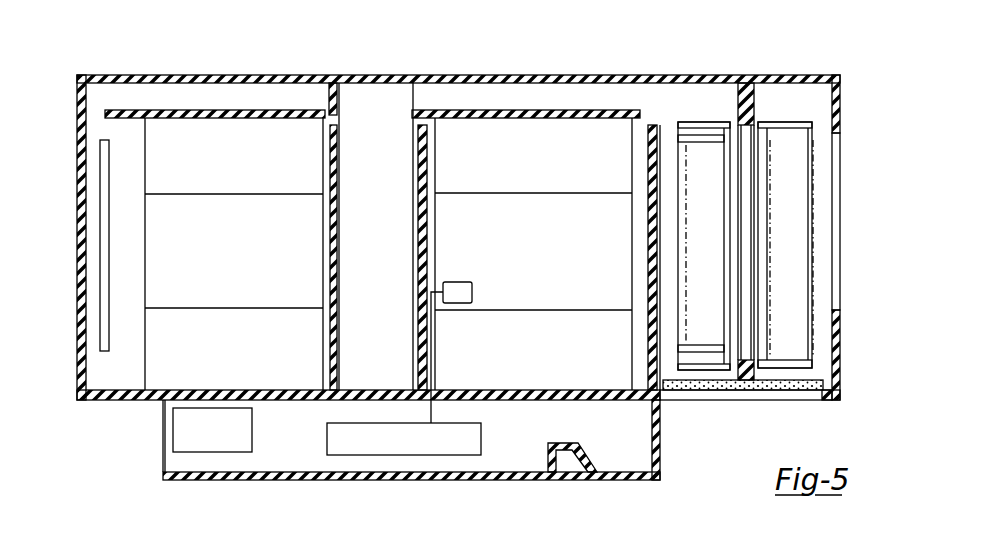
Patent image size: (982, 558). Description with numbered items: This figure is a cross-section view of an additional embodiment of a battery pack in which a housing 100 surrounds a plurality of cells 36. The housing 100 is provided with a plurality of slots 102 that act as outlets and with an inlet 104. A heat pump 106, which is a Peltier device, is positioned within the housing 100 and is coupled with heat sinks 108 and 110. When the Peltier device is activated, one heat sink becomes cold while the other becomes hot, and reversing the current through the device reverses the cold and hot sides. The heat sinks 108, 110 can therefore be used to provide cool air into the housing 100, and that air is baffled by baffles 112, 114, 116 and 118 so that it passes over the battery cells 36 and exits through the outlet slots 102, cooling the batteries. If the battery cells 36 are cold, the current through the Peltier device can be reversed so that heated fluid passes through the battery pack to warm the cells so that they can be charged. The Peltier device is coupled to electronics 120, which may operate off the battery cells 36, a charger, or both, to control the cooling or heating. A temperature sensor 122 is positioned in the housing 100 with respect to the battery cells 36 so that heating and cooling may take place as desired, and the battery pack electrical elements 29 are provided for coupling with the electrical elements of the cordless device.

The housing 100 is at (800, 67).
The slots 102 is at (80, 218).
The inlet 104 is at (710, 395).
The heat pump 106 is at (748, 80).
The heat sink 108 is at (688, 123).
The heat sink 110 is at (803, 125).
The baffle 112 is at (648, 135).
The baffle 114 is at (427, 140).
The baffle 116 is at (338, 132).
The baffle 118 is at (102, 158).
The electronics 120 is at (382, 443).
The temperature sensor 122 is at (462, 293).
The battery pack electrical elements 29 is at (183, 442).
The cells 36 is at (218, 170).